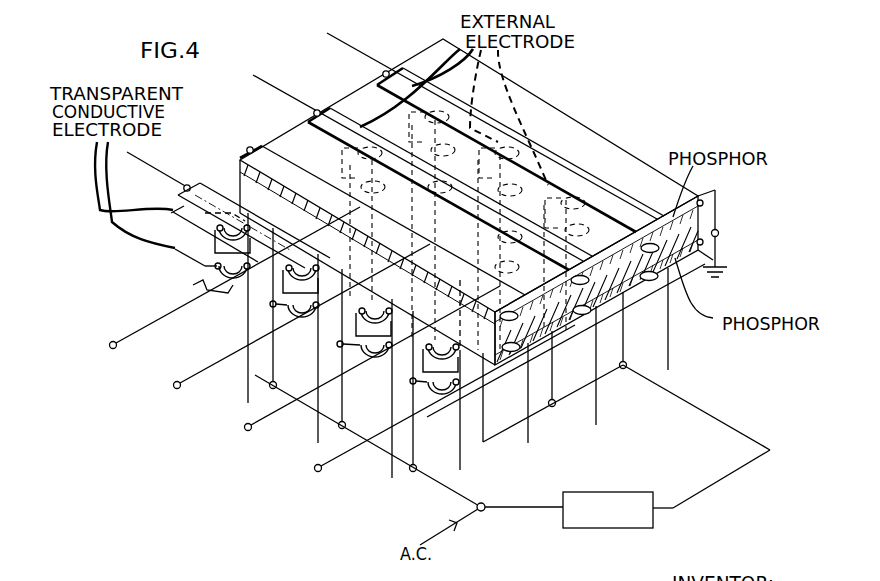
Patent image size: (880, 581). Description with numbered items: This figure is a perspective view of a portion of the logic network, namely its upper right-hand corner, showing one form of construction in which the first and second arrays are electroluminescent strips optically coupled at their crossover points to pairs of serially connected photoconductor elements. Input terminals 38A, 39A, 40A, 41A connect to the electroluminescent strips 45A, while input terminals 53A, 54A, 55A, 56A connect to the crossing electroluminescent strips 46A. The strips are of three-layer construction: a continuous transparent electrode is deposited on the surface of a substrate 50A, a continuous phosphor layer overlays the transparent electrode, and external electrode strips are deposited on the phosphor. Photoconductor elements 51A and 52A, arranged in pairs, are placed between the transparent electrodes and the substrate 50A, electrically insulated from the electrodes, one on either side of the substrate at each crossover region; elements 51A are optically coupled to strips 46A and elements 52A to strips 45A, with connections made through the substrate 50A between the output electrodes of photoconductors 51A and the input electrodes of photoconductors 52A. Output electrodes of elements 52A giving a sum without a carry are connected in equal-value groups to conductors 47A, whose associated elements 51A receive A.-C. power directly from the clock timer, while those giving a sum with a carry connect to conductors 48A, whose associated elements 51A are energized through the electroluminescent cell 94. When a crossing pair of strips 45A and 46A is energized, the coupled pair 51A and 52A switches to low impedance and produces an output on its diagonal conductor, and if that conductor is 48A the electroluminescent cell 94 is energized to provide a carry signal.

The input terminal 38A is at (189, 184).
The input terminal 39A is at (252, 147).
The input terminal 40A is at (318, 110).
The input terminal 41A is at (387, 71).
The electroluminescent strip 45A is at (180, 194).
The electroluminescent strip 46A is at (193, 285).
The conductor 47A is at (248, 396).
The conductor 48A is at (528, 431).
The substrate 50A is at (683, 247).
The photoconductor element 51A is at (215, 265).
The photoconductor element 52A is at (181, 219).
The input terminal 53A is at (221, 278).
The input terminal 54A is at (286, 316).
The input terminal 55A is at (244, 427).
The input terminal 56A is at (314, 468).
The electroluminescent cell 94 is at (625, 492).